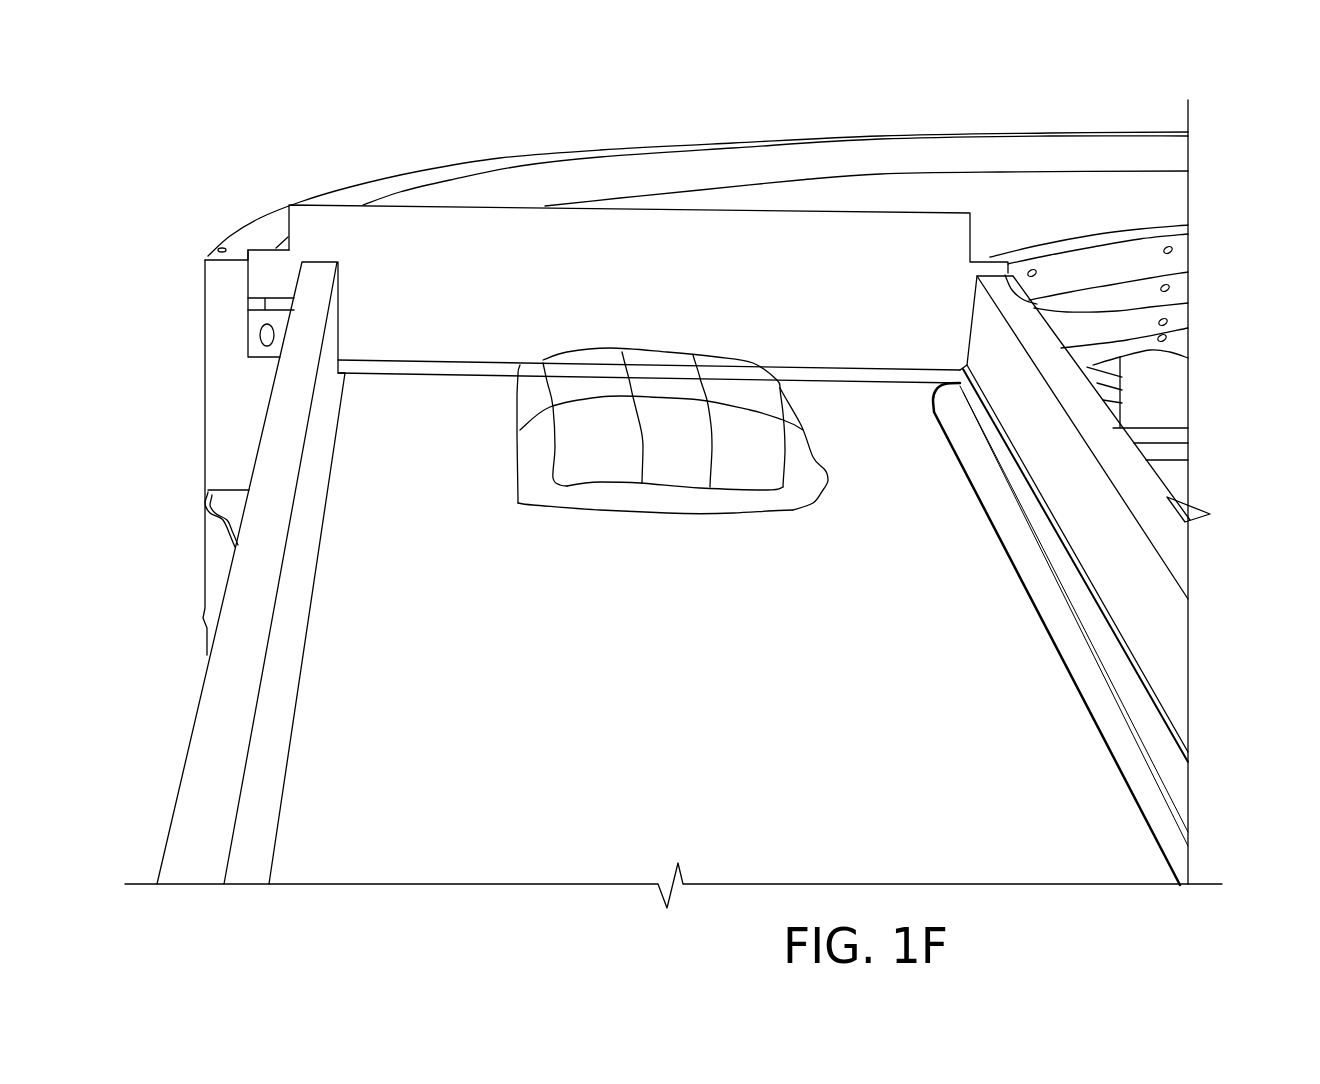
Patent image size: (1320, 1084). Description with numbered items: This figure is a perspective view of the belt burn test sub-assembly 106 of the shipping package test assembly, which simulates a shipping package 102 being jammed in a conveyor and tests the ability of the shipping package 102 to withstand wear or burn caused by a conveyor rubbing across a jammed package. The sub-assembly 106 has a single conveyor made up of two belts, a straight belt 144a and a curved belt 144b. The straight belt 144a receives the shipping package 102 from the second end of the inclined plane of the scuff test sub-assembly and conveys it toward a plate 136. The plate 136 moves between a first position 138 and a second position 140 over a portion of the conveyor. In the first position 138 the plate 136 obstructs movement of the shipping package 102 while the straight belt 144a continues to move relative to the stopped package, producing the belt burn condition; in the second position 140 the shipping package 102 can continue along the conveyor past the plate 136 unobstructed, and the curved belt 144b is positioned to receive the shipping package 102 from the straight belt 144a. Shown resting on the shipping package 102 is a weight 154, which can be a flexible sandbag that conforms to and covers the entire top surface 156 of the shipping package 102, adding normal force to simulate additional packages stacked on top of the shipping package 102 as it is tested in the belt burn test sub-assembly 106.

The shipping package 102 is at (699, 404).
The belt burn test sub-assembly 106 is at (279, 80).
The plate 136 is at (907, 212).
The first position 138 is at (1188, 303).
The second position 140 is at (733, 142).
The straight belt 144a is at (472, 848).
The curved belt 144b is at (1145, 197).
The weight 154 is at (583, 367).
The top surface 156 is at (563, 393).